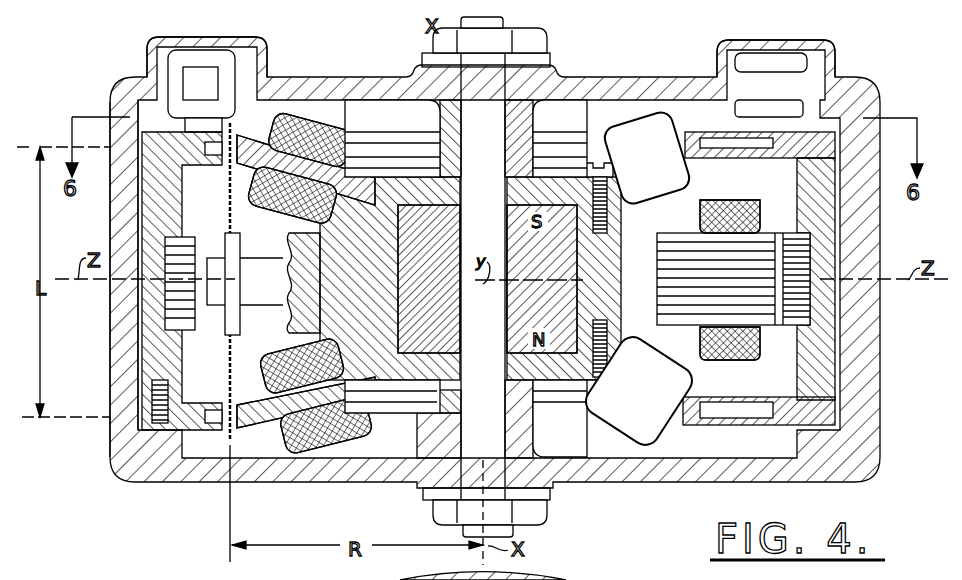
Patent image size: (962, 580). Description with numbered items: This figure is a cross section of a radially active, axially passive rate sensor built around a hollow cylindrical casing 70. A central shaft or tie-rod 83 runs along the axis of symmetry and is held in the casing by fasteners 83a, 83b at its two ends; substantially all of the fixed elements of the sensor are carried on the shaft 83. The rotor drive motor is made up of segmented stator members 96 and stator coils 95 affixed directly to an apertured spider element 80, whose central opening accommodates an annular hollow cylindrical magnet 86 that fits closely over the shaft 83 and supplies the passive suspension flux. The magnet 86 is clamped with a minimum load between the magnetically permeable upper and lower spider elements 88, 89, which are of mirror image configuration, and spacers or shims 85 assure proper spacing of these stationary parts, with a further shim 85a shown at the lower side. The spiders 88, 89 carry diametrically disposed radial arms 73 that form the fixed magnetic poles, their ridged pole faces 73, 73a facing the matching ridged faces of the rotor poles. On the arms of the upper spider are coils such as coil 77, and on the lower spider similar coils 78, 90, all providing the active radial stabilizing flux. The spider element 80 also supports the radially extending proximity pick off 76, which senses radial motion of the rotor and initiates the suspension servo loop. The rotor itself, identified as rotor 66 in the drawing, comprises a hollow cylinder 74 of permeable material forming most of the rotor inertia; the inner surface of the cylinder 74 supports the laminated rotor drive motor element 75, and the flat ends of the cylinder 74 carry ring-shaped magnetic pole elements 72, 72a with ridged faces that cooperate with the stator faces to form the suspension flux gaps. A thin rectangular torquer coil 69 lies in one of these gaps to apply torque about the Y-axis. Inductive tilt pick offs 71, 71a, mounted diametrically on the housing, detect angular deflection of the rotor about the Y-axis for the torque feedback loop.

The rotor 66 is at (283, 425).
The torquer coil 69 is at (229, 364).
The hollow cylindrical casing 70 is at (122, 104).
The inductive tilt pick off 71 is at (265, 62).
The inductive tilt pick off 71a is at (828, 62).
The ring-shaped magnetic pole element 72 is at (200, 166).
The ring-shaped magnetic pole element 72a is at (198, 412).
The radial arm / ridged pole face 73 is at (262, 138).
The ridged pole face 73a is at (306, 419).
The hollow cylinder 74 is at (133, 230).
The laminated rotor drive motor element 75 is at (196, 246).
The proximity pick off 76 is at (258, 258).
The coil 77 is at (344, 130).
The coil 78 is at (345, 435).
The apertured spider element 80 is at (283, 345).
The central shaft or tie-rod 83 is at (500, 98).
The fastener 83a is at (548, 44).
The fastener 83b is at (550, 508).
The spacer or shim 85 is at (548, 152).
The bearing 85a is at (530, 405).
The annular hollow cylindrical magnet 86 is at (573, 172).
The upper spider element 88 is at (408, 160).
The lower spider element 89 is at (668, 124).
The coil 90 is at (648, 355).
The stator coil 95 is at (738, 198).
The segmented stator member 96 is at (767, 318).